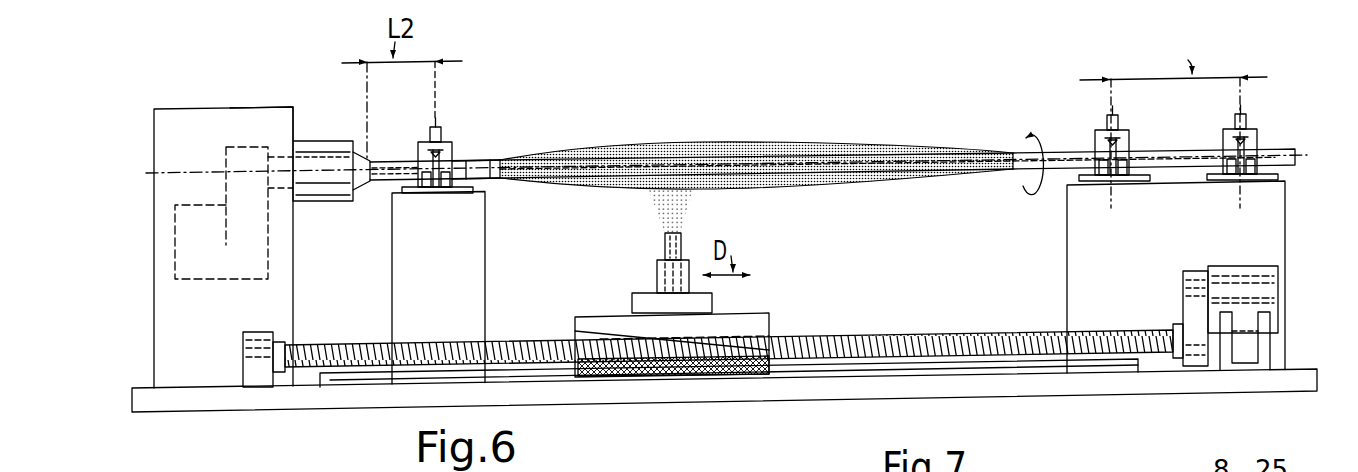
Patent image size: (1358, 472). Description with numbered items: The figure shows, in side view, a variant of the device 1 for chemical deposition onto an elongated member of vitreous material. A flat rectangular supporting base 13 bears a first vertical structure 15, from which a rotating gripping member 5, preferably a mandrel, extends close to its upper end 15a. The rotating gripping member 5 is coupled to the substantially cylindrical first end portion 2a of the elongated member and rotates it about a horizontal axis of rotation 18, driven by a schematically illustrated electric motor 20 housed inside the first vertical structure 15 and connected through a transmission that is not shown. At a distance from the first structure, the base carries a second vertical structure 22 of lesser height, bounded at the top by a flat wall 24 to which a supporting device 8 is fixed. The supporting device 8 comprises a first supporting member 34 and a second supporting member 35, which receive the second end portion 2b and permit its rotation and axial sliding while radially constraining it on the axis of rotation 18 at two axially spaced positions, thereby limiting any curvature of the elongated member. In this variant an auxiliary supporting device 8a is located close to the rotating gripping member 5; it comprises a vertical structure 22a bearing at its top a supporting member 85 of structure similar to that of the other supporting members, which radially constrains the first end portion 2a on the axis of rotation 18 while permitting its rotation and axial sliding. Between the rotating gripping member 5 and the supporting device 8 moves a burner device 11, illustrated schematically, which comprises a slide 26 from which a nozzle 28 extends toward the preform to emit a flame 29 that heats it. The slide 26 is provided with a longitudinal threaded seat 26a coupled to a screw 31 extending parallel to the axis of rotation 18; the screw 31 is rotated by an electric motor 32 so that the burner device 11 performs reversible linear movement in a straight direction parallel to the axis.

The device for chemical deposition 1 is at (773, 135).
The first end portion 2a is at (393, 165).
The second end portion 2b is at (1180, 150).
The rotating gripping member 5 is at (335, 135).
The supporting device 8 is at (1150, 72).
The auxiliary supporting device 8a is at (458, 138).
The burner device 11 is at (762, 295).
The supporting base 13 is at (250, 397).
The first vertical structure 15 is at (143, 213).
The upper end 15a is at (276, 132).
The horizontal axis of rotation 18 is at (481, 165).
The electric motor 20 is at (193, 280).
The second vertical structure 22 is at (1265, 245).
The vertical structure 22a is at (465, 278).
The flat wall 24 is at (1278, 176).
The slide 26 is at (745, 328).
The longitudinal threaded seat 26a is at (582, 332).
The nozzle 28 is at (658, 250).
The flame 29 is at (677, 205).
The screw 31 is at (930, 337).
The electric motor 32 is at (1228, 289).
The first supporting member 34 is at (1107, 70).
The second supporting member 35 is at (1270, 55).
The supporting member 85 is at (467, 157).